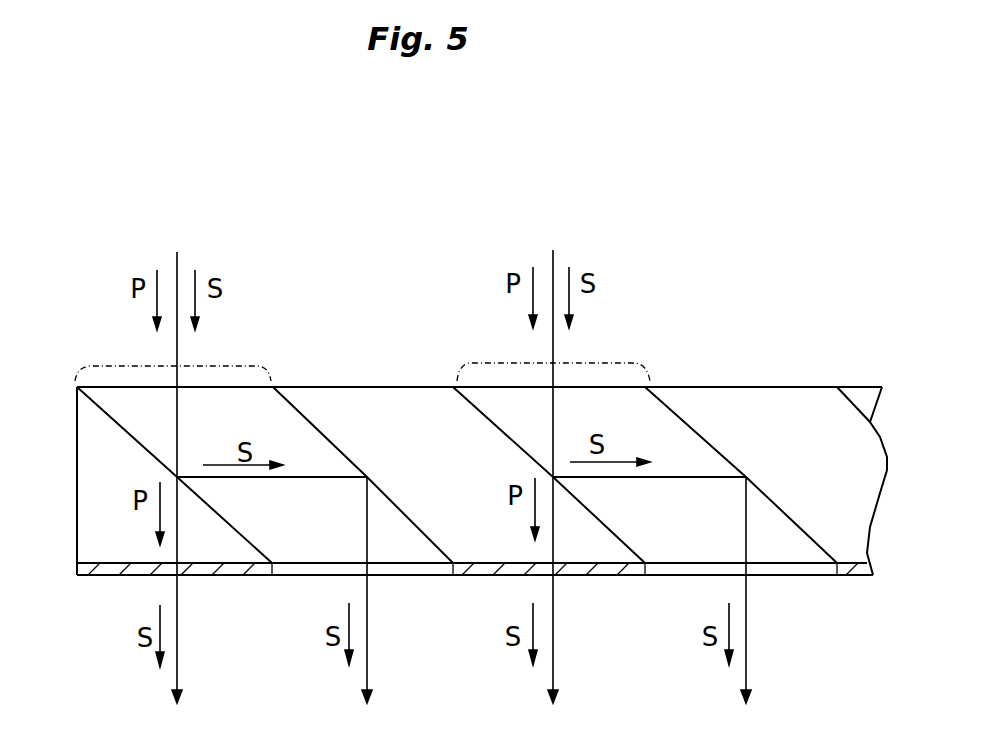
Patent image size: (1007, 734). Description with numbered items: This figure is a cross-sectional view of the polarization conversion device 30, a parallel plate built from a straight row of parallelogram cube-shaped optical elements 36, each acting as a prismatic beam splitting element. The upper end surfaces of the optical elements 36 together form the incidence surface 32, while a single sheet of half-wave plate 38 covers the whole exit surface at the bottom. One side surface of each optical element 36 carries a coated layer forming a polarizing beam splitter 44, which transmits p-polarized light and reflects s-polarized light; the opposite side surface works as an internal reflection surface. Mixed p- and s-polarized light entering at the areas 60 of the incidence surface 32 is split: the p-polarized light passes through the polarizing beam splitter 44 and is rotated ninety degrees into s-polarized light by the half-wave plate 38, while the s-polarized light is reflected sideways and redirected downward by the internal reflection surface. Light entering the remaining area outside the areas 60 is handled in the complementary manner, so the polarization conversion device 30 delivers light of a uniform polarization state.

The polarization conversion device 30 is at (472, 260).
The incidence surface 32 is at (752, 386).
The parallelogram cube-shaped optical element 36 is at (86, 442).
The half-wave plate 38 is at (100, 578).
The polarizing beam splitter coated layer 44 is at (250, 541).
The area of the incidence surface 60 is at (205, 366).